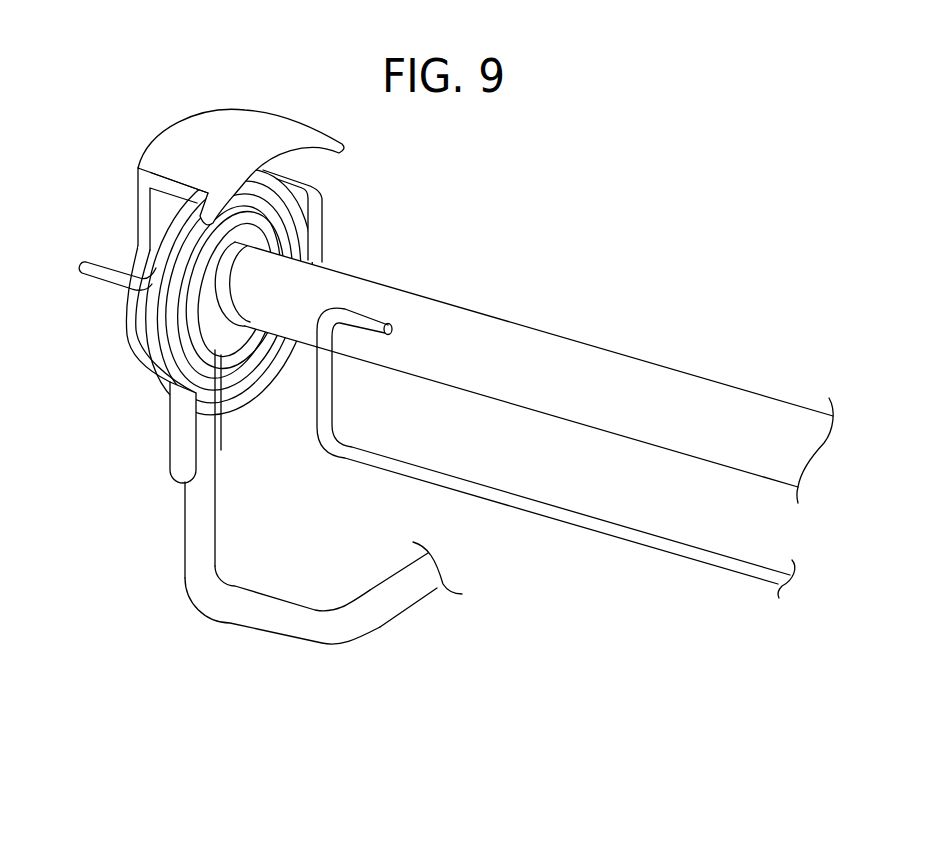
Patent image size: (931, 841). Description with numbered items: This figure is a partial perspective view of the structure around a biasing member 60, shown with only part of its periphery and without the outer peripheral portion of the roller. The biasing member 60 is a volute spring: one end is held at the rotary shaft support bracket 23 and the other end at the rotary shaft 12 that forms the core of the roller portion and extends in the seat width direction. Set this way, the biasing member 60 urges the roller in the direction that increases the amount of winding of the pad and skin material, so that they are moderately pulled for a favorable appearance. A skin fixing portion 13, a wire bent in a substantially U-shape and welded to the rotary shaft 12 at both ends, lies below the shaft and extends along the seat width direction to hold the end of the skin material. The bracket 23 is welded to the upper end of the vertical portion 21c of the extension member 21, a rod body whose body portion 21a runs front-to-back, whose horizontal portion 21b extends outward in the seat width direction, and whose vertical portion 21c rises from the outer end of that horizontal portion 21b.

The rotary shaft 12 is at (491, 370).
The skin fixing portion 13 is at (600, 527).
The extension member 21 is at (289, 548).
The body portion 21a is at (377, 612).
The horizontal portion 21b is at (263, 607).
The vertical portion 21c is at (197, 530).
The rotary shaft support bracket 23 is at (142, 318).
The biasing member 60 is at (315, 229).